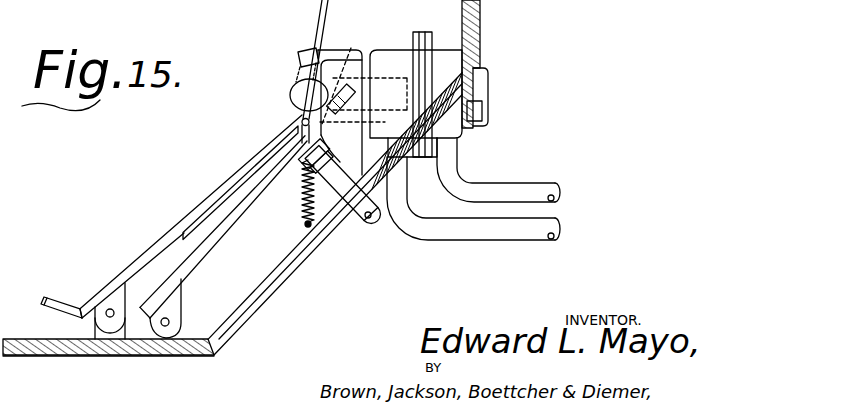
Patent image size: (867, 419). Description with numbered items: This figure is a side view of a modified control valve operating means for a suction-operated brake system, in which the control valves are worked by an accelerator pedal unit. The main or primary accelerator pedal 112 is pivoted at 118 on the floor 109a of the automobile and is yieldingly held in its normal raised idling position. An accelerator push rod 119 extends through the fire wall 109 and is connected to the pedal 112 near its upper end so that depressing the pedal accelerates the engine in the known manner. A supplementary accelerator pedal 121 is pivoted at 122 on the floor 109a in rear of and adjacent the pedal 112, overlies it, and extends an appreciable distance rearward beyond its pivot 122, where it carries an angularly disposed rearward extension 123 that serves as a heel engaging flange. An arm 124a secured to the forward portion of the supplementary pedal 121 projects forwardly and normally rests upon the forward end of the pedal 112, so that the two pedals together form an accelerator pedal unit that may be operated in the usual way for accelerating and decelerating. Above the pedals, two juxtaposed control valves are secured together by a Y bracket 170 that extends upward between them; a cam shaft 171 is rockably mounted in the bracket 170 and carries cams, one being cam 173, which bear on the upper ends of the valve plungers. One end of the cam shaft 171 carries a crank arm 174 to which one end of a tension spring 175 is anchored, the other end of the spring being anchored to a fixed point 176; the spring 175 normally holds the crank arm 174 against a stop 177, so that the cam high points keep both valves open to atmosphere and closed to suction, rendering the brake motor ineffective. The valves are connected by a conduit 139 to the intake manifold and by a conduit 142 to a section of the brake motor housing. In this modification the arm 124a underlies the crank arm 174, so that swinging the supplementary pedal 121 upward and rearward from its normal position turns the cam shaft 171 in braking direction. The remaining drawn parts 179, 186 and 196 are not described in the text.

The fire wall 109 is at (288, 278).
The floor 109a is at (147, 358).
The main or primary accelerator pedal 112 is at (237, 218).
The pivot 118 is at (170, 316).
The accelerator push rod 119 is at (365, 225).
The supplementary accelerator pedal 121 is at (153, 245).
The pivot 122 is at (108, 320).
The rearward extension 123 is at (50, 296).
The arm 124a is at (282, 136).
The conduit 139 is at (512, 188).
The conduit 142 is at (513, 231).
The Y bracket 170 is at (355, 50).
The cam shaft 171 is at (328, 59).
The cam 173 is at (292, 96).
The crank arm 174 is at (301, 126).
The tension spring 175 is at (303, 188).
The fixed point 176 is at (305, 224).
The stop 177 is at (416, 94).
The clamp 179 is at (302, 50).
The member 186 is at (165, 5).
The member 196 is at (394, 46).